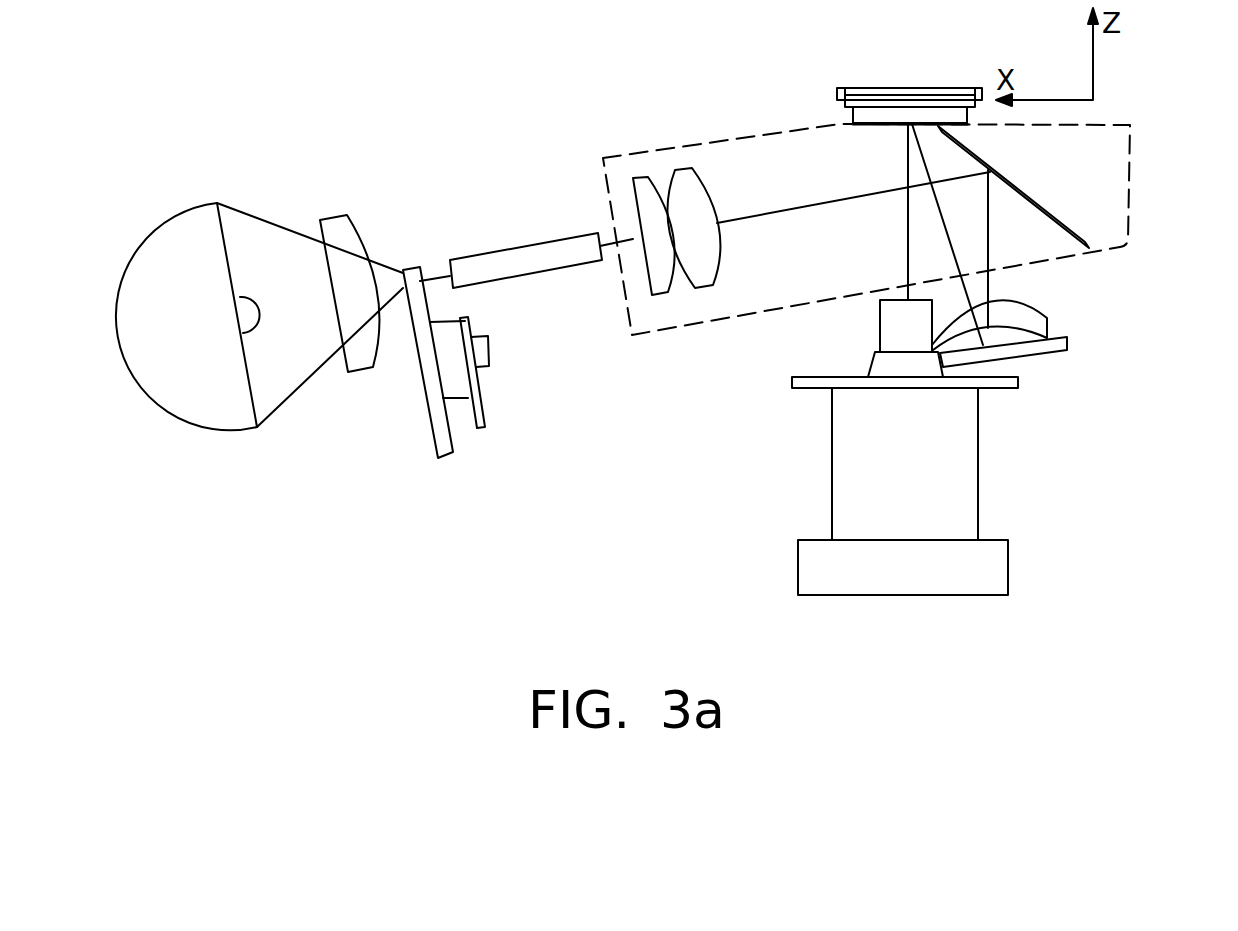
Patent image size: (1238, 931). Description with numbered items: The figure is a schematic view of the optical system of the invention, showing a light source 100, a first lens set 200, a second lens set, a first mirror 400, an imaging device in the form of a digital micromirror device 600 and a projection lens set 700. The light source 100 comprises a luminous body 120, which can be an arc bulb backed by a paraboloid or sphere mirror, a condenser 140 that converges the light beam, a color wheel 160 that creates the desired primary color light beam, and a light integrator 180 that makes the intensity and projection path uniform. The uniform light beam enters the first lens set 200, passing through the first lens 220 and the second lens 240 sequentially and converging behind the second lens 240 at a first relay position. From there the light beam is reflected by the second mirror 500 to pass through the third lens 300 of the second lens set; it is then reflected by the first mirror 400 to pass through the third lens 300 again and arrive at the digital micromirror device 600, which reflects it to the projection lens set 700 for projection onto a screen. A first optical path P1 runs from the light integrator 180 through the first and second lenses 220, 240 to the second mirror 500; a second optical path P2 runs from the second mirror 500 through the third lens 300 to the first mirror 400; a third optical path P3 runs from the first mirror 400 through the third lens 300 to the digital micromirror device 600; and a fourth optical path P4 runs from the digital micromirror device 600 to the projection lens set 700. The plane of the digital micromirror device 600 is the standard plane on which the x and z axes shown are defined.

The light source 100 is at (536, 70).
The luminous body 120 is at (185, 222).
The condenser 140 is at (333, 222).
The color wheel 160 is at (408, 273).
The light integrator 180 is at (530, 252).
The first lens set 200 is at (1132, 183).
The first lens 220 is at (642, 182).
The second lens 240 is at (685, 175).
The third lens 300 is at (1050, 322).
The first mirror 400 is at (1057, 352).
The second mirror 500 is at (1050, 210).
The digital micromirror device 600 is at (908, 88).
The projection lens set 700 is at (968, 464).
The first optical path P1 is at (788, 208).
The second optical path P2 is at (990, 283).
The third optical path P3 is at (955, 258).
The fourth optical path P4 is at (907, 230).